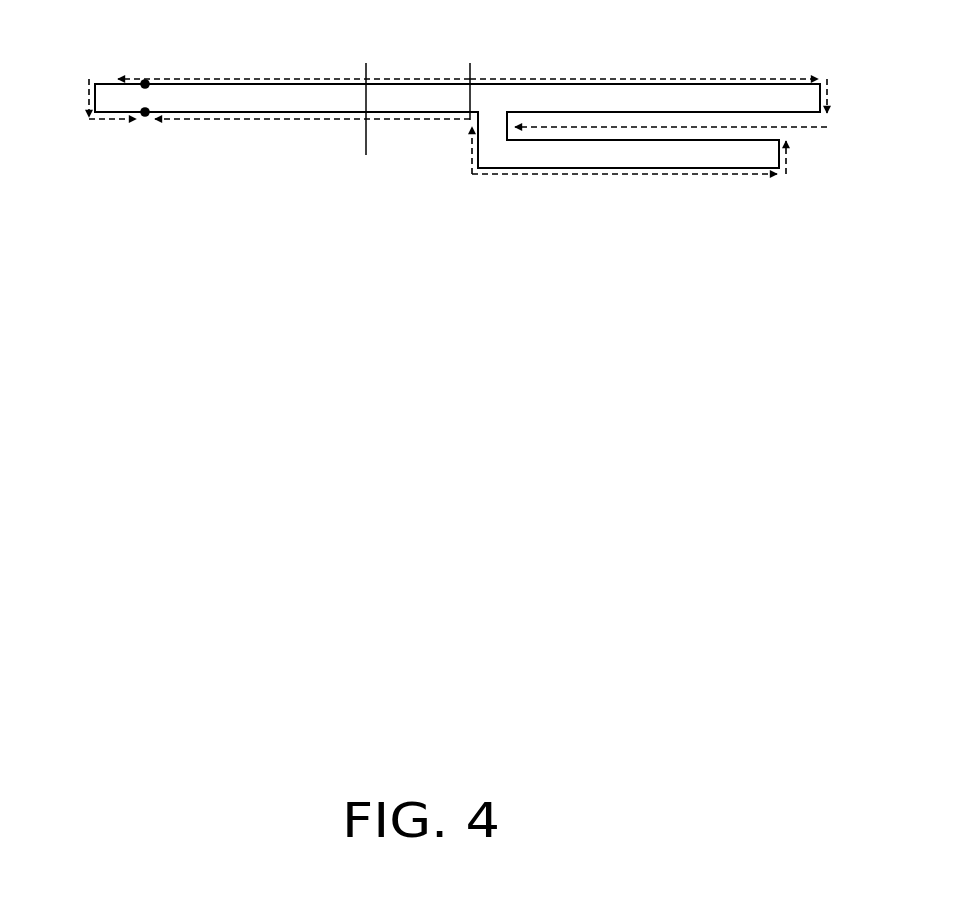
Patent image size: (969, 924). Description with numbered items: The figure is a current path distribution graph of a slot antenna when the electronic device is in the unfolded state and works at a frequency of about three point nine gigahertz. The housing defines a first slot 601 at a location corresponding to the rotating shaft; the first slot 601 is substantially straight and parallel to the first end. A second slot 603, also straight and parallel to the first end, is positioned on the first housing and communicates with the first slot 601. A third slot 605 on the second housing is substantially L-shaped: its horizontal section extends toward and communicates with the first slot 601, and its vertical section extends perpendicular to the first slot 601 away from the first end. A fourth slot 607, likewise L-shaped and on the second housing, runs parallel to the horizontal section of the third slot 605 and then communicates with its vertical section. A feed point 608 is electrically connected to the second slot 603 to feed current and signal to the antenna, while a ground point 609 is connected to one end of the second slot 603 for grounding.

The first slot 601 is at (395, 97).
The second slot 603 is at (280, 95).
The third slot 605 is at (647, 95).
The fourth slot 607 is at (633, 158).
The feed point 608 is at (141, 80).
The ground point 609 is at (145, 117).